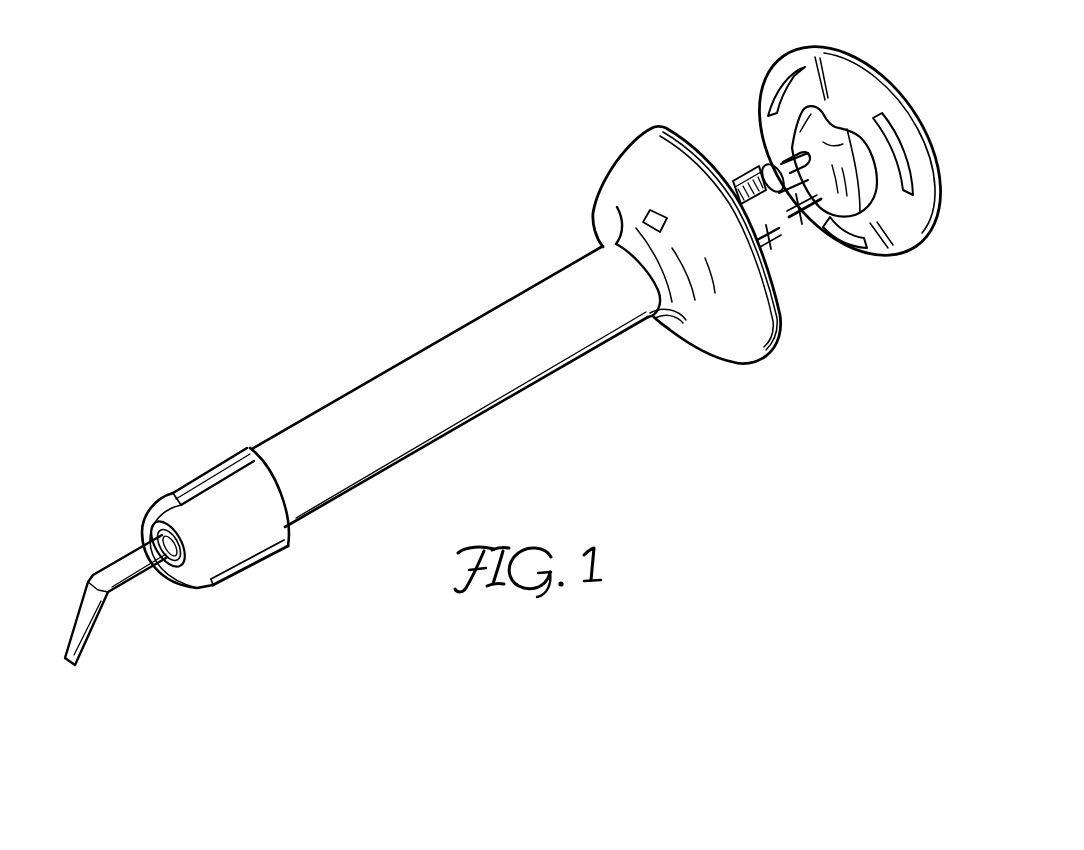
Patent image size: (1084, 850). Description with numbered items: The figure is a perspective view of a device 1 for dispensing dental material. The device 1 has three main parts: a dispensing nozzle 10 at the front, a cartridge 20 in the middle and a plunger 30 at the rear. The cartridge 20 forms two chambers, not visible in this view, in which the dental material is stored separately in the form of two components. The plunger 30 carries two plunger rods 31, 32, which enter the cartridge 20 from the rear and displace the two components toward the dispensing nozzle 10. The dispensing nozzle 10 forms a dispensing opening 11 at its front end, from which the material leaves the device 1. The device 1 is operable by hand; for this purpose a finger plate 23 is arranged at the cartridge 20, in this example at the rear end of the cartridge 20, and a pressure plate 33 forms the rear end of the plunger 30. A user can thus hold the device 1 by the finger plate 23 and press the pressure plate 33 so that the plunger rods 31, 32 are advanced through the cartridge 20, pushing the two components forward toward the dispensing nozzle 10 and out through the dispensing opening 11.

The device 1 is at (347, 301).
The dispensing nozzle 10 is at (238, 537).
The dispensing opening 11 is at (66, 668).
The cartridge 20 is at (562, 342).
The finger plate 23 is at (743, 341).
The plunger 30 is at (806, 207).
The plunger rod 31 is at (779, 222).
The plunger rod 32 is at (737, 182).
The pressure plate 33 is at (905, 108).